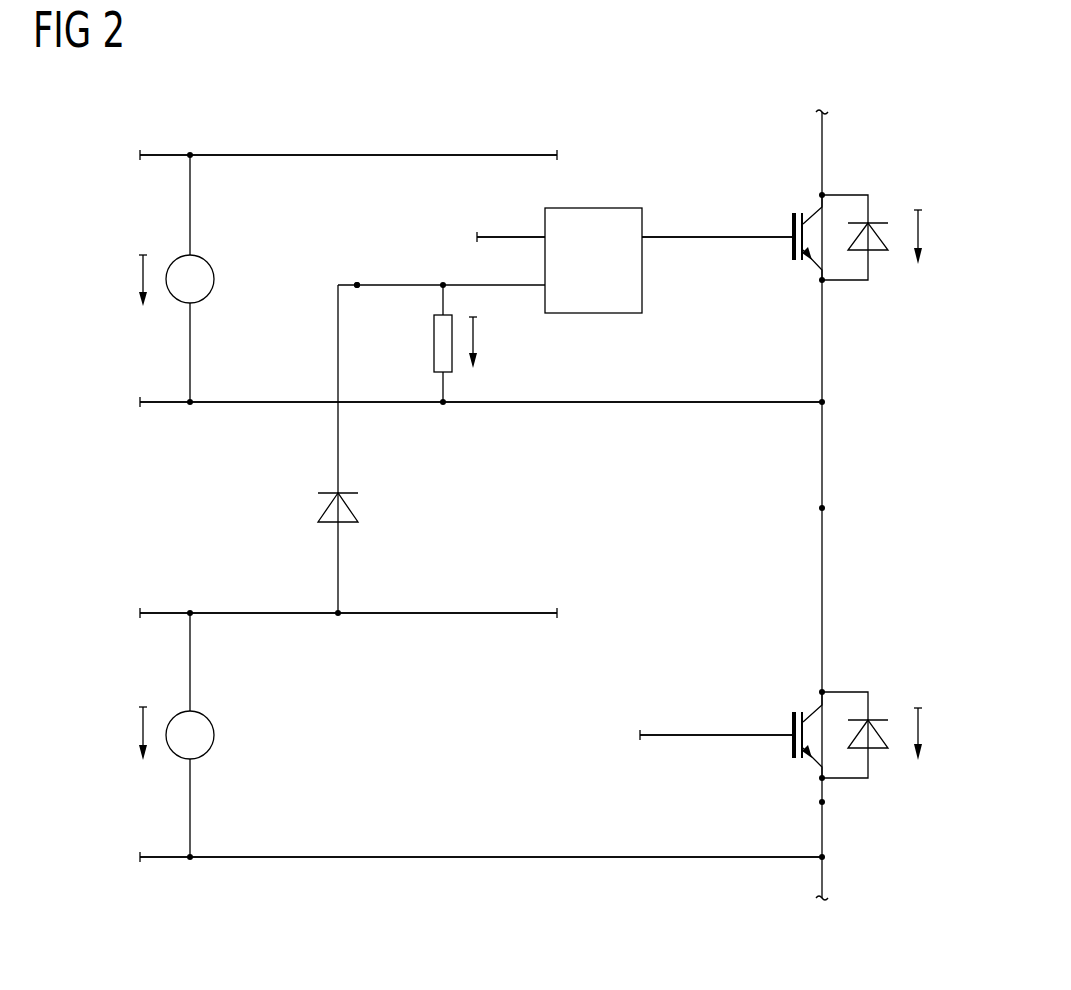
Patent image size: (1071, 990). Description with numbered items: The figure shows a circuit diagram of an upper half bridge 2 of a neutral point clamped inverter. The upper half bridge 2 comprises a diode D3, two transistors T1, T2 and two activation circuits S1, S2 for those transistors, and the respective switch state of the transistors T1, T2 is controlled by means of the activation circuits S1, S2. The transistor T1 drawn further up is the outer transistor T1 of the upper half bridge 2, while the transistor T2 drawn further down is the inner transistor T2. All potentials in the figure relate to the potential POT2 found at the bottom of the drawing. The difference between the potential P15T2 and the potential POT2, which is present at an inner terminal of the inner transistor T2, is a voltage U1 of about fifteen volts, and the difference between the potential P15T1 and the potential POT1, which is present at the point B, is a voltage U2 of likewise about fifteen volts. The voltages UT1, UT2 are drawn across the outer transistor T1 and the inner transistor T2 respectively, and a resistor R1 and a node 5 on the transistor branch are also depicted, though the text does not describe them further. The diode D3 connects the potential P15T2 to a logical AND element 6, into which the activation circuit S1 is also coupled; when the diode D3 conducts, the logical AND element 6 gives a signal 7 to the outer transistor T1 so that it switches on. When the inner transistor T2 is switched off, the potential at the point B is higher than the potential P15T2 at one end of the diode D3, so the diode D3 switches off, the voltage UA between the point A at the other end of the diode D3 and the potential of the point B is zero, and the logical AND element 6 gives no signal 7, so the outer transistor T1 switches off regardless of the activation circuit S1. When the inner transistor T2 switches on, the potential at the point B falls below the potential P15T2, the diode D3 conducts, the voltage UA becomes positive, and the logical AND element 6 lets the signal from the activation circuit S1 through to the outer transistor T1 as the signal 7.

The upper half bridge 2 is at (98, 496).
The node 5 is at (820, 803).
The logical AND element 6 is at (595, 207).
The signal 7 is at (717, 236).
The point A is at (357, 283).
The point B is at (829, 508).
The resistor R1 is at (433, 345).
The diode D3 is at (360, 508).
The outer transistor T1 is at (887, 242).
The inner transistor T2 is at (889, 739).
The activation circuit S1 is at (479, 237).
The activation circuit S2 is at (663, 733).
The voltage U1 is at (140, 273).
The voltage U2 is at (140, 728).
The voltage UA is at (476, 334).
The voltage across first transistor UT1 is at (922, 233).
The voltage across second transistor UT2 is at (922, 730).
The potential P15T1 is at (160, 153).
The potential POT1 is at (163, 406).
The potential P15T2 is at (163, 611).
The potential POT2 is at (160, 861).